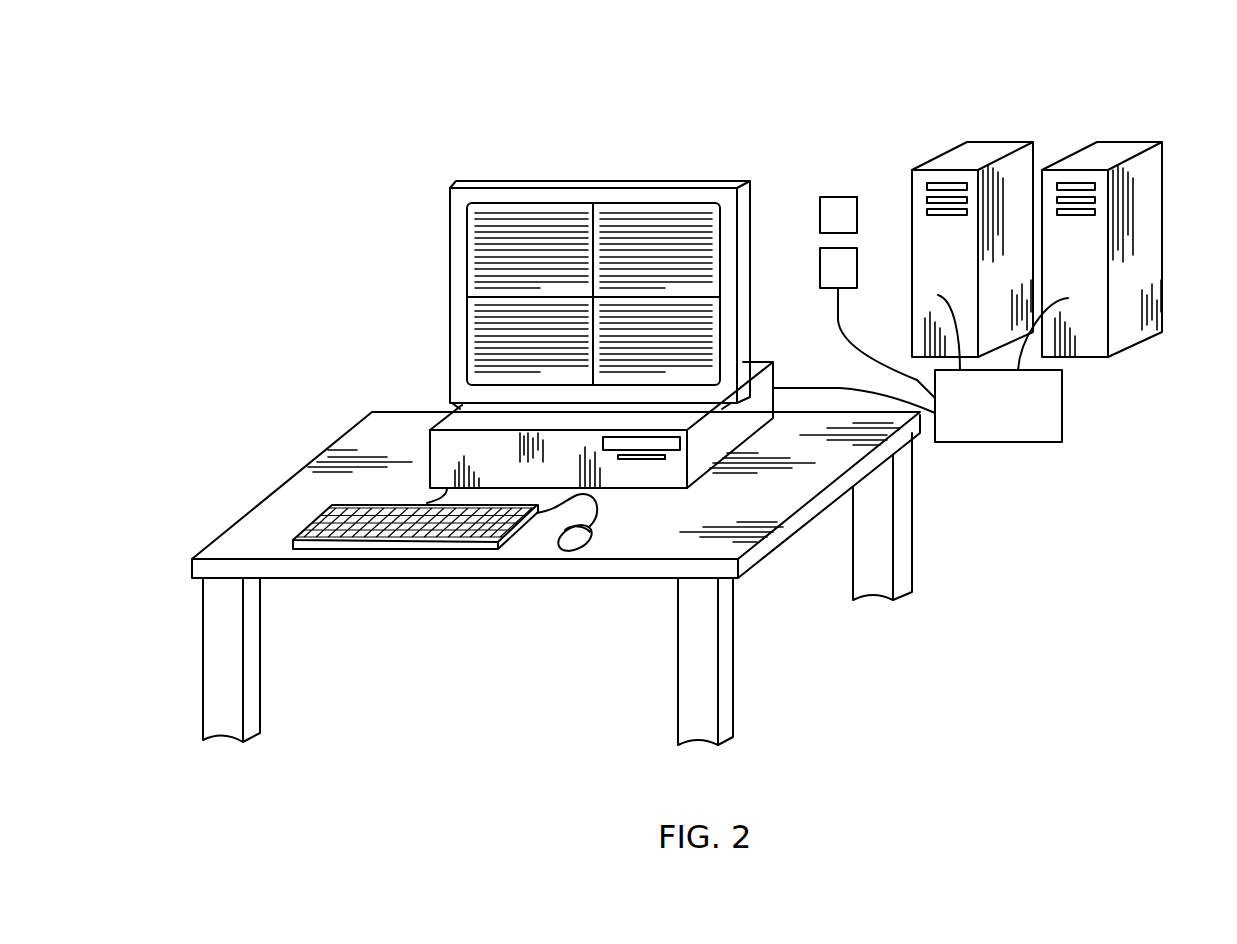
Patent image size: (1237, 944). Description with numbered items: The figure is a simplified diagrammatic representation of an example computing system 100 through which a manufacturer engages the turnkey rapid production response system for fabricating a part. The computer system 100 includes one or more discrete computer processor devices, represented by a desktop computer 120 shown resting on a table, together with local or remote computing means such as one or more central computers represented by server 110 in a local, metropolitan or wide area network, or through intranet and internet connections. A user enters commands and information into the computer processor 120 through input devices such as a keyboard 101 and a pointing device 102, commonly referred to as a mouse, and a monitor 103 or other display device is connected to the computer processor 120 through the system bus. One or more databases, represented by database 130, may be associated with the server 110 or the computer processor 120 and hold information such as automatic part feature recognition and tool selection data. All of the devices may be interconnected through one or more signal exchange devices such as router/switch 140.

The computer system 100 is at (467, 105).
The keyboard 101 is at (320, 515).
The pointing device 102 is at (555, 548).
The monitor 103 is at (613, 207).
The server 110 is at (1093, 150).
The desktop computer 120 is at (447, 420).
The database 130 is at (838, 197).
The router/switch 140 is at (1062, 380).